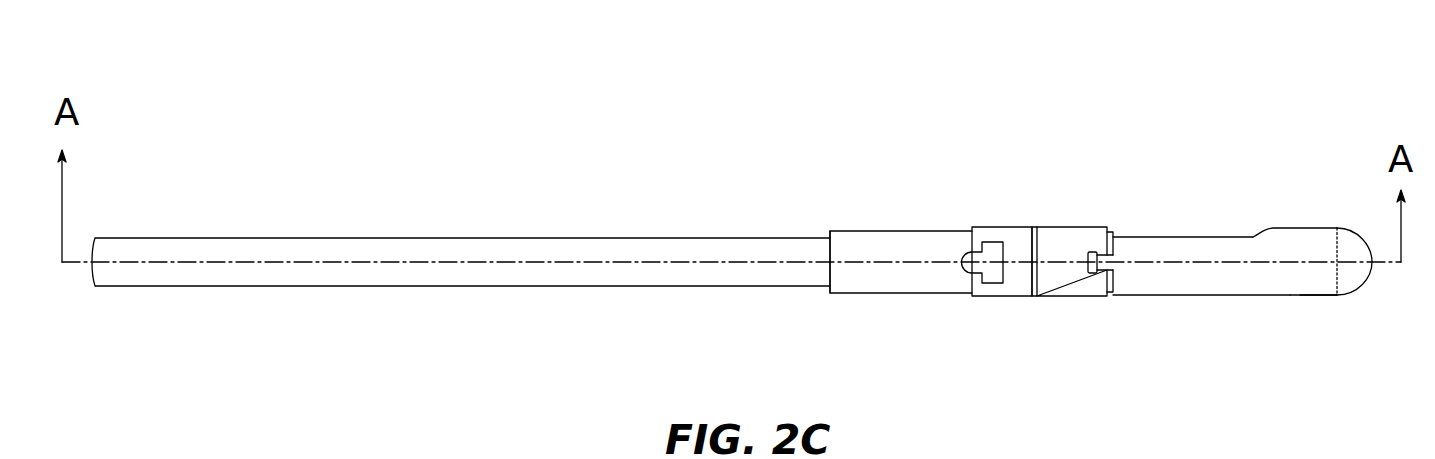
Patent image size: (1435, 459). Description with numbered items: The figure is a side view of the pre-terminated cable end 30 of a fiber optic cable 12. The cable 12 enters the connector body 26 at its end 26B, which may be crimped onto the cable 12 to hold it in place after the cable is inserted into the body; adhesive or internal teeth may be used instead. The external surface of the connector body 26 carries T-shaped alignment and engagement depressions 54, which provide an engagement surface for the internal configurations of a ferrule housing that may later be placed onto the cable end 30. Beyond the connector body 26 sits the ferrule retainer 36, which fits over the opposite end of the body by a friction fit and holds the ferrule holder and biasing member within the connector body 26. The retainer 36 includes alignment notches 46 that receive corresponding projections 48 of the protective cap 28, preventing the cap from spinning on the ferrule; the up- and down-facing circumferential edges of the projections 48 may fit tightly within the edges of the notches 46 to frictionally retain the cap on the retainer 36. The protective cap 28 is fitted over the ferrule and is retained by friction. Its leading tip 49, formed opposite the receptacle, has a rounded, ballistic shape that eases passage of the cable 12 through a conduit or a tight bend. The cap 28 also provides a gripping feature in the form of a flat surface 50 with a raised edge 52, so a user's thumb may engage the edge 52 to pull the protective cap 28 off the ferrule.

The pre-terminated cable end 30 is at (990, 87).
The cable 12 is at (628, 270).
The connector body 26 is at (913, 231).
The end of the connector body 26B is at (830, 231).
The T-shaped alignment and engagement depressions 54 is at (993, 270).
The ferrule retainer 36 is at (1072, 227).
The alignment notches 46 is at (1090, 273).
The projections 48 is at (1098, 273).
The flat surface 50 is at (1173, 237).
The raised edge 52 is at (1253, 237).
The leading tip 49 is at (1360, 240).
The protective cap 28 is at (1303, 272).